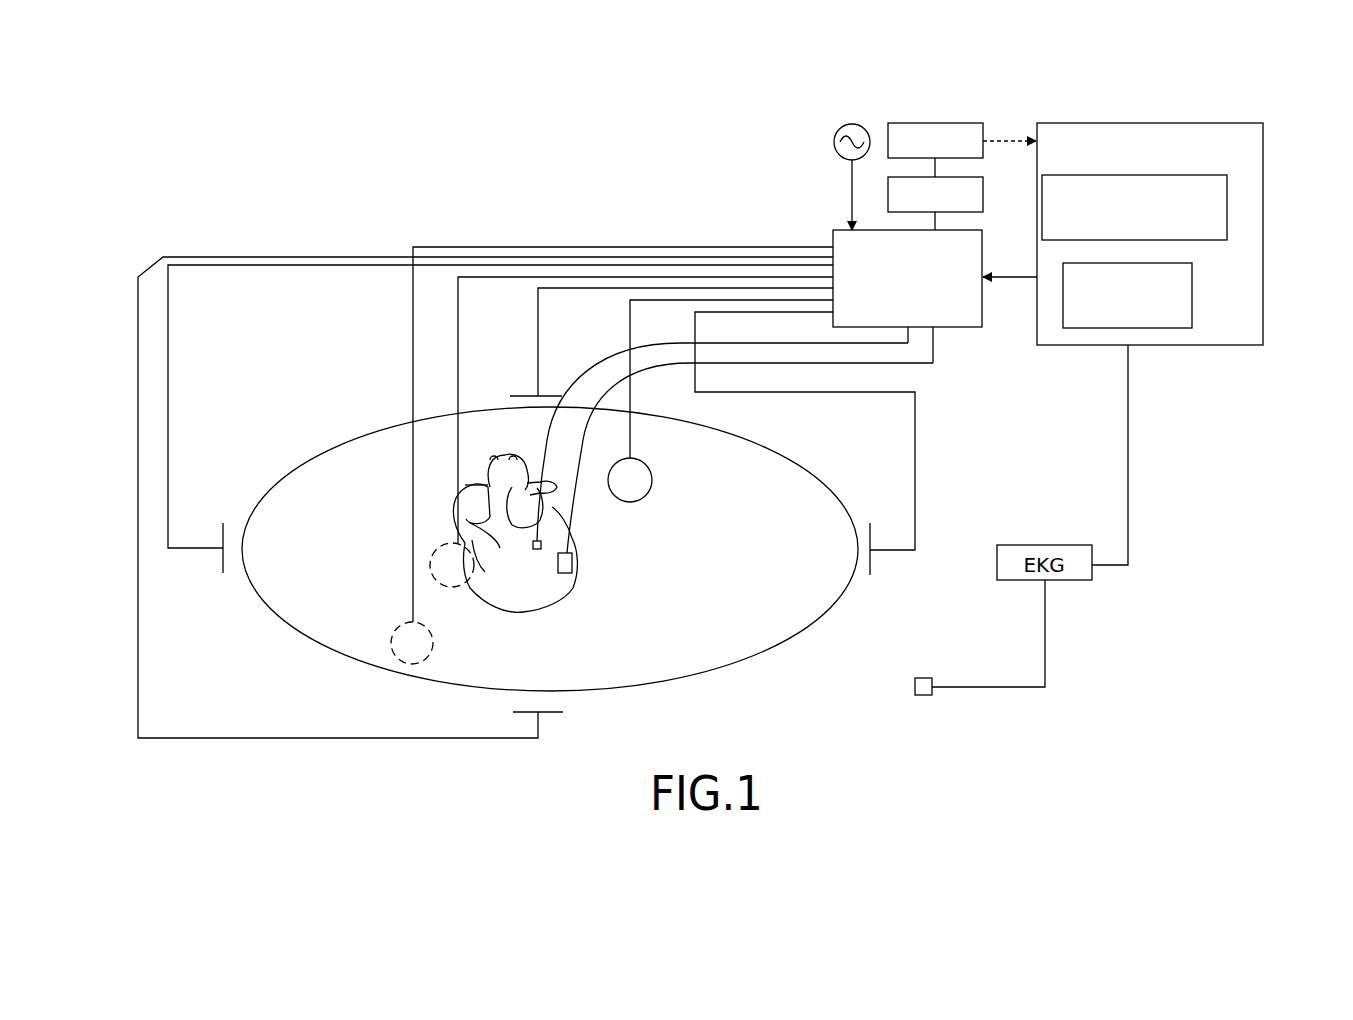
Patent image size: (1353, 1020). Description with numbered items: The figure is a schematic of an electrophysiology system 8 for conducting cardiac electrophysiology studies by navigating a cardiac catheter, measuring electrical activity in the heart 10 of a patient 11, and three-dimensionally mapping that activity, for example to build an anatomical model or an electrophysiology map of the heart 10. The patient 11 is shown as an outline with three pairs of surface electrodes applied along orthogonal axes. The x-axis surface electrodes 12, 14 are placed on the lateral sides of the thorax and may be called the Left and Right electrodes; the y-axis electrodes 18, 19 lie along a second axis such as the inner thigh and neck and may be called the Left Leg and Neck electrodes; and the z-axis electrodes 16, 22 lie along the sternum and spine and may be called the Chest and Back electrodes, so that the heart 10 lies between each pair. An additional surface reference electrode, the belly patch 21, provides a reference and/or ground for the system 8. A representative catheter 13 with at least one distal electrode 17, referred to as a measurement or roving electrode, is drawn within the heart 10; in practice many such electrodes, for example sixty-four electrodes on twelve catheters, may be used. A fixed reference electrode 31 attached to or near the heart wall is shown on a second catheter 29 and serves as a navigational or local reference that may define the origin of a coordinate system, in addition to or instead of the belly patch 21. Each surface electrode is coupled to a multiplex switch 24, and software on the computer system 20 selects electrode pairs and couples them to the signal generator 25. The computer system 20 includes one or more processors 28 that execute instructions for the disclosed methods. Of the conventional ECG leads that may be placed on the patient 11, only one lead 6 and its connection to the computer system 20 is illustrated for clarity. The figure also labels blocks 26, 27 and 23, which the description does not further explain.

The electrophysiology system 8 is at (220, 172).
The signal generator 25 is at (835, 134).
The analog to digital converter 26 is at (953, 123).
The low pass filter 27 is at (983, 185).
The multiplex switch 24 is at (907, 278).
The computer system 20 is at (1123, 234).
The processors 28 is at (1134, 207).
The display 23 is at (1127, 295).
The ECG lead 6 is at (915, 692).
The patient 11 is at (776, 448).
The y-axis surface electrode 18 is at (222, 570).
The x-axis surface electrode 14 is at (540, 716).
The y-axis surface electrode 19 is at (872, 562).
The x-axis surface electrode 12 is at (528, 395).
The z-axis surface electrode 16 is at (631, 434).
The belly patch electrode 21 is at (412, 568).
The z-axis surface electrode 22 is at (459, 325).
The catheter 13 is at (934, 348).
The second catheter 29 is at (556, 426).
The fixed reference electrode 31 is at (537, 549).
The heart 10 is at (573, 560).
The catheter electrode 17 is at (567, 573).